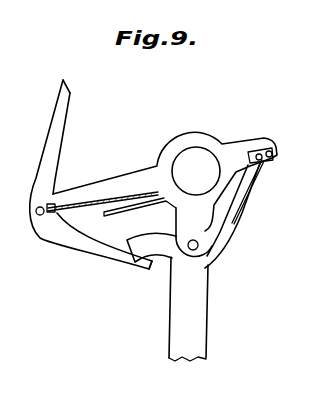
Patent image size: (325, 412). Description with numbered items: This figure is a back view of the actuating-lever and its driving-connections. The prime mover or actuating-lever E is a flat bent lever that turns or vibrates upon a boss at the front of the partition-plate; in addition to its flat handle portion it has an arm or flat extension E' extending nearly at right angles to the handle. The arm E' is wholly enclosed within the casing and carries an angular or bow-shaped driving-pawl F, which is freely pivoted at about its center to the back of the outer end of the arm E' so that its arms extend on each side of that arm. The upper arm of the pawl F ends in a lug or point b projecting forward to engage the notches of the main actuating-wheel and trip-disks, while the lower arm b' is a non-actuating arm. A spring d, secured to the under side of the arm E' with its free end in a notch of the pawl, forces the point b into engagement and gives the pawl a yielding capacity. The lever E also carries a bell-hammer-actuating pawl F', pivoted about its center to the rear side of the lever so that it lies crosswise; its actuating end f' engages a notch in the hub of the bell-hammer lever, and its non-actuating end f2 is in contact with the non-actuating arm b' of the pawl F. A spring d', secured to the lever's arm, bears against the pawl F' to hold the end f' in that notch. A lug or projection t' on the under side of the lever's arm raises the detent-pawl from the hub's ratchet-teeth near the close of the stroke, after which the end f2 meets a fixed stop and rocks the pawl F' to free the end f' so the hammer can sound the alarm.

The lug or point b is at (56, 84).
The driving-pawl F is at (133, 174).
The spring d is at (102, 201).
The arm or flat extension E' is at (114, 191).
The lug or projection t' is at (273, 157).
The spring d' is at (251, 192).
The actuating end f' is at (233, 215).
The bell-hammer-actuating pawl F' is at (215, 247).
The non-actuating end f2 is at (151, 238).
The non-actuating arm b' is at (134, 270).
The actuating-lever E is at (188, 309).